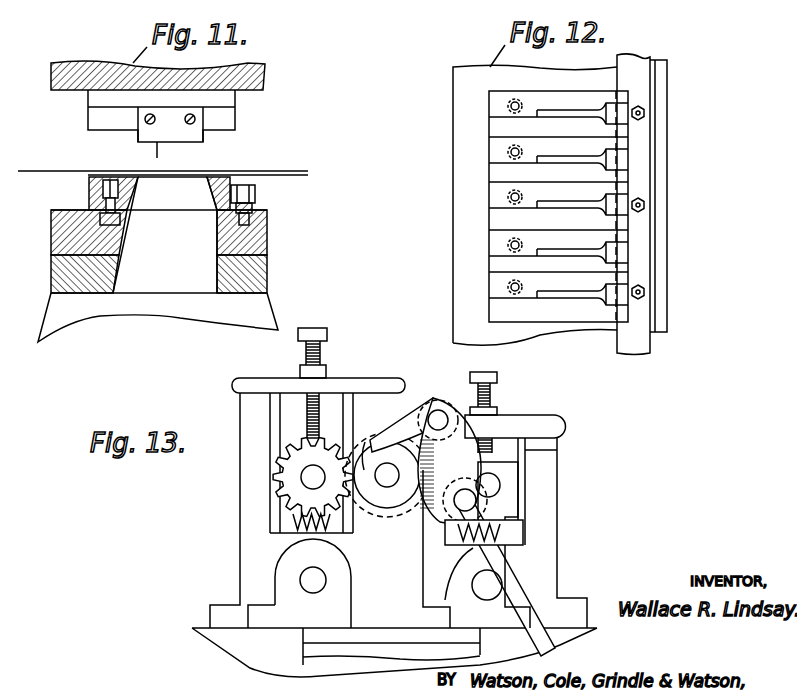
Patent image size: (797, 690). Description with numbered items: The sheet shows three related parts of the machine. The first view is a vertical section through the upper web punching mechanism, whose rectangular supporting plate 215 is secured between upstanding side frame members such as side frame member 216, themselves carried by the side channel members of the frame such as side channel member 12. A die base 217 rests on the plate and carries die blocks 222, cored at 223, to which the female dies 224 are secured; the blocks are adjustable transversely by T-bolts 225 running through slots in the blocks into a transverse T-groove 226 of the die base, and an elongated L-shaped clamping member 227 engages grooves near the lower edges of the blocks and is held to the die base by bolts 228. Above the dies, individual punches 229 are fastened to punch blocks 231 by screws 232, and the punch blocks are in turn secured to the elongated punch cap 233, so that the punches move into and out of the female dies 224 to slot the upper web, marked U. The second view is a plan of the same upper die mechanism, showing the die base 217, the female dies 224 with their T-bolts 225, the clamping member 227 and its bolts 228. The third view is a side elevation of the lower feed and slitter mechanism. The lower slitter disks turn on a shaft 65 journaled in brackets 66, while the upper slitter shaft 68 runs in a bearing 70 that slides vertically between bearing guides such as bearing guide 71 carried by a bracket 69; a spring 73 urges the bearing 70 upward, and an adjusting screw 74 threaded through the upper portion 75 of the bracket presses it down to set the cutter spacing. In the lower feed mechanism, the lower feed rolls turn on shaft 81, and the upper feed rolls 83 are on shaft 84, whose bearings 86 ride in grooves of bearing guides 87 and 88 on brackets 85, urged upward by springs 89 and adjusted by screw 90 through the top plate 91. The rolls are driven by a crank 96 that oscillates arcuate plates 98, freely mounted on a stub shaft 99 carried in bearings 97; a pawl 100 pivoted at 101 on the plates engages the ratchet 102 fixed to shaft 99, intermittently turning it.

In FIG. 13, the side channel member 12 is at (222, 638).
In FIG. 13, the shaft 65 is at (472, 580).
In FIG. 13, the bracket 66 is at (452, 597).
In FIG. 13, the shaft 68 is at (410, 466).
In FIG. 13, the bracket 69 is at (533, 457).
In FIG. 13, the bearing 70 is at (505, 486).
In FIG. 13, the bearing guide 71 is at (559, 443).
In FIG. 13, the spring 73 is at (500, 533).
In FIG. 13, the adjusting screw 74 is at (497, 382).
In FIG. 13, the upper portion of the bracket 75 is at (532, 420).
In FIG. 13, the shaft 81 is at (326, 579).
In FIG. 13, the upper feed roll 83 is at (285, 580).
In FIG. 13, the shaft 84 is at (302, 477).
In FIG. 13, the bracket 85 is at (250, 512).
In FIG. 13, the bearing 86 is at (277, 455).
In FIG. 13, the bearing guide 87 is at (277, 393).
In FIG. 13, the bearing guide 88 is at (352, 400).
In FIG. 13, the spring 89 is at (294, 524).
In FIG. 13, the adjusting screw 90 is at (321, 343).
In FIG. 13, the top plate 91 is at (232, 384).
In FIG. 13, the crank 96 is at (510, 572).
In FIG. 13, the bearing 97 is at (345, 620).
In FIG. 13, the arcuate plate 98 is at (465, 440).
In FIG. 13, the stub shaft 99 is at (387, 487).
In FIG. 13, the pawl 100 is at (408, 408).
In FIG. 13, the pivot 101 is at (438, 410).
In FIG. 13, the ratchet 102 is at (363, 445).
In FIG. 11, the supporting plate 215 is at (254, 275).
In FIG. 11, the side frame member 216 is at (76, 318).
In FIG. 11, the die base 217 is at (267, 232).
In FIG. 12, the die base 217 is at (462, 163).
In FIG. 11, the die block 222 is at (140, 216).
In FIG. 11, the core 223 is at (167, 198).
In FIG. 11, the female die 224 is at (215, 173).
In FIG. 12, the female die 224 is at (497, 237).
In FIG. 11, the T-bolt 225 is at (90, 196).
In FIG. 12, the T-bolt 225 is at (510, 287).
In FIG. 11, the T-groove 226 is at (100, 220).
In FIG. 11, the clamping member 227 is at (258, 200).
In FIG. 12, the clamping member 227 is at (648, 228).
In FIG. 11, the bolt 228 is at (262, 188).
In FIG. 12, the bolt 228 is at (645, 117).
In FIG. 11, the punch 229 is at (174, 154).
In FIG. 11, the punch block 231 is at (88, 108).
In FIG. 11, the screw 232 is at (146, 121).
In FIG. 11, the punch cap 233 is at (267, 76).
In FIG. 11, the blank strip U is at (287, 172).